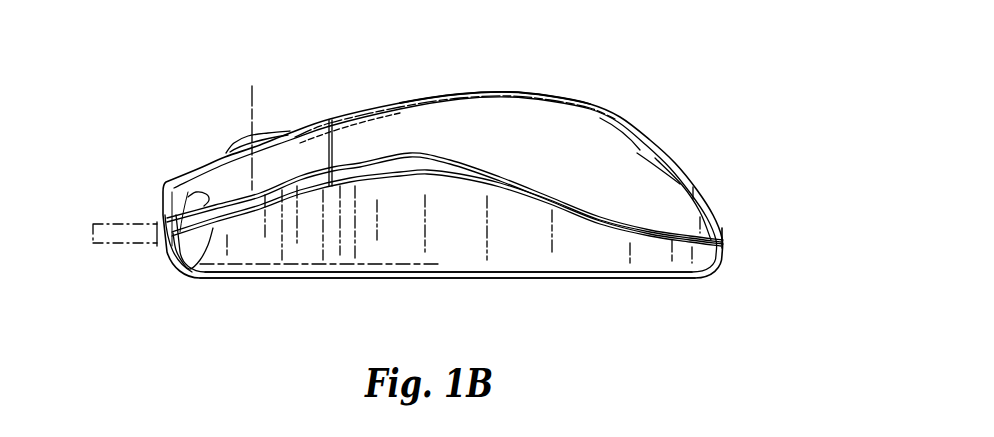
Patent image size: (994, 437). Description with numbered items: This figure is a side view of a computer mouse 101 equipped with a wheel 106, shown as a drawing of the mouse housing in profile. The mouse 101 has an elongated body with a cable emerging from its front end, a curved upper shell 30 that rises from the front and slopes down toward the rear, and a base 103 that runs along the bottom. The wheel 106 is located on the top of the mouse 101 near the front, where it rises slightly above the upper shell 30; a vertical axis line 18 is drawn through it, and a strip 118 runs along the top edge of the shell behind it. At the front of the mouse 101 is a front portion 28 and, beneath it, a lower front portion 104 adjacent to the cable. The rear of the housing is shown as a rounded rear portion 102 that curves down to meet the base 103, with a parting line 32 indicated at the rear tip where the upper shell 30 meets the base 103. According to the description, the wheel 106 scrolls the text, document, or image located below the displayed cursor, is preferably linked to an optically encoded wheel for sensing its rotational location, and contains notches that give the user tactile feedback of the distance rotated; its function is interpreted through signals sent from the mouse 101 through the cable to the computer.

The mouse 101 is at (170, 156).
The front portion 28 is at (162, 187).
The scroll wheel axis 18 is at (251, 100).
The wheel 106 is at (262, 133).
The top shell edge strip 118 is at (426, 95).
The upper shell 30 is at (514, 90).
The rear portion of housing 102 is at (672, 143).
The rear tip / parting line 32 is at (730, 233).
The base 103 is at (614, 255).
The front lower portion 104 is at (190, 274).